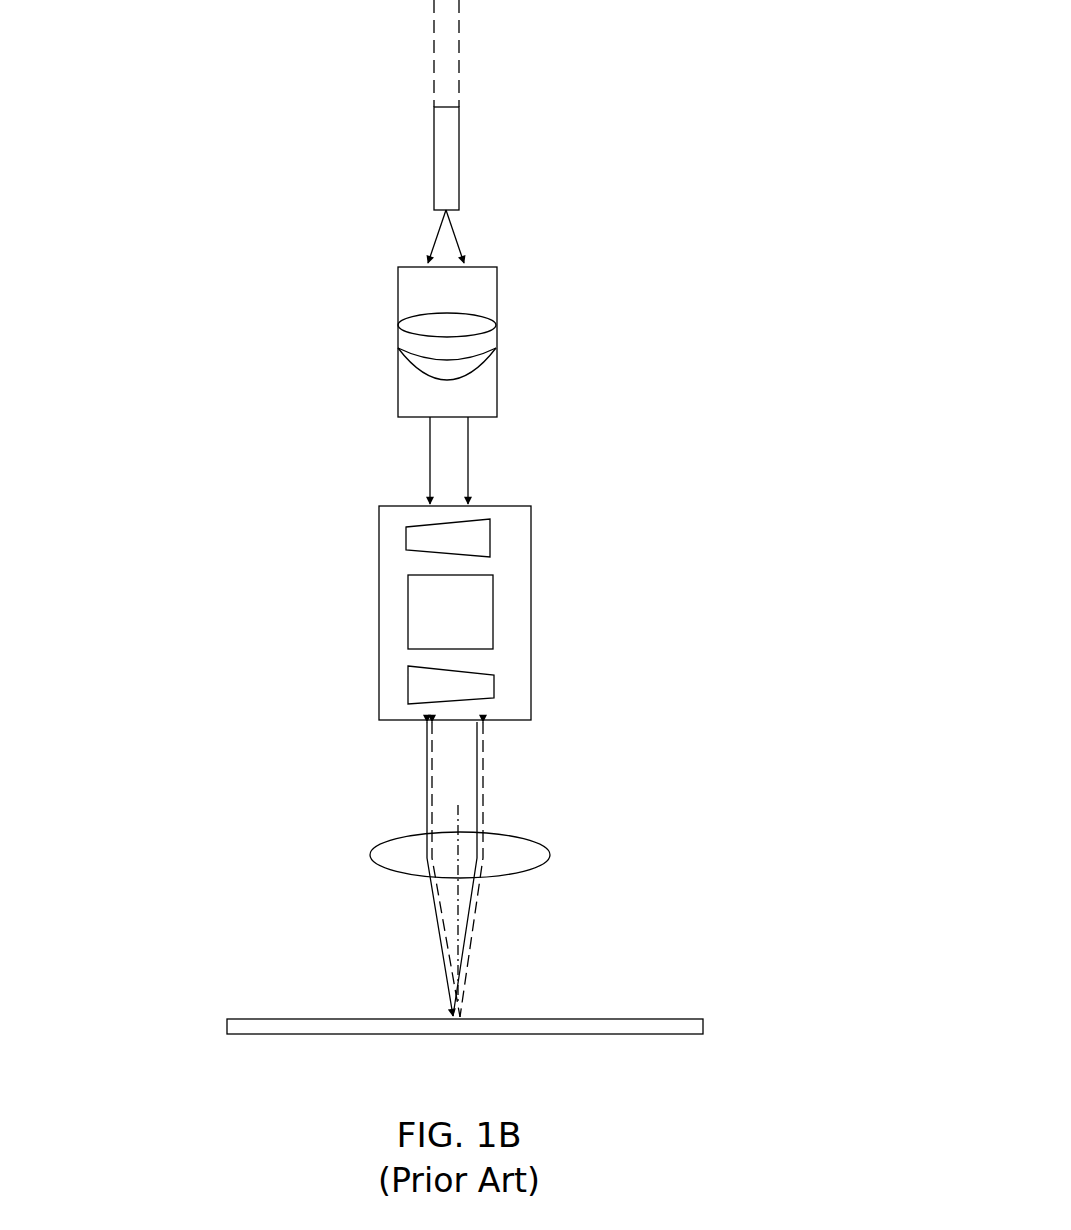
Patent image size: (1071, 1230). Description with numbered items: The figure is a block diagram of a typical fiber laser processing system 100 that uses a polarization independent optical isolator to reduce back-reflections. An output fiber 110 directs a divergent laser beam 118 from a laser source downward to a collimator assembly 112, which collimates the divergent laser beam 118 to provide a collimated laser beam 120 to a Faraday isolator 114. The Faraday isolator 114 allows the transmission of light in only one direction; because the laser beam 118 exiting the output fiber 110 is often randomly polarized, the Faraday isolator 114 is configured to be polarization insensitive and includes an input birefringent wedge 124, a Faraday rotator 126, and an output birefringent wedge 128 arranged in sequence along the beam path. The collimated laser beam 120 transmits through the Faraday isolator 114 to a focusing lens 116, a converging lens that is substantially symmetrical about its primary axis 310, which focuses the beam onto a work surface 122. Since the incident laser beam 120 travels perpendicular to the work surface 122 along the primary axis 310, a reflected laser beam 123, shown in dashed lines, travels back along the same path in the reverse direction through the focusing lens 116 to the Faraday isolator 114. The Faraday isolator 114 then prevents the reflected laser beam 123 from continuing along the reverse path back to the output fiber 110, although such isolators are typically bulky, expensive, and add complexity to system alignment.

The fiber laser processing system 100 is at (250, 36).
The output fiber 110 is at (459, 155).
The divergent laser beam 118 is at (455, 236).
The collimator assembly 112 is at (497, 343).
The collimated laser beam 120 is at (468, 455).
The Faraday isolator 114 is at (531, 585).
The input birefringent wedge 124 is at (406, 530).
The Faraday rotator 126 is at (408, 605).
The output birefringent wedge 128 is at (408, 684).
The primary axis 310 is at (458, 806).
The focusing lens 116 is at (526, 839).
The reflected laser beam 123 is at (479, 905).
The work surface 122 is at (342, 1019).